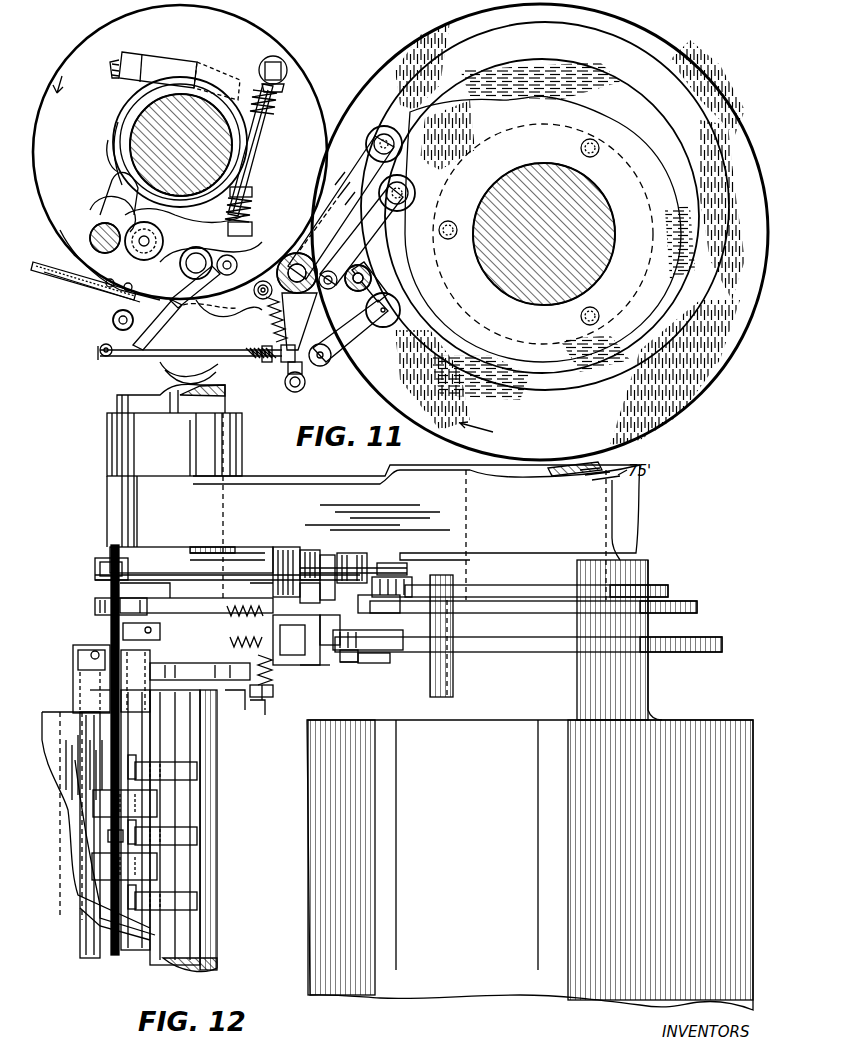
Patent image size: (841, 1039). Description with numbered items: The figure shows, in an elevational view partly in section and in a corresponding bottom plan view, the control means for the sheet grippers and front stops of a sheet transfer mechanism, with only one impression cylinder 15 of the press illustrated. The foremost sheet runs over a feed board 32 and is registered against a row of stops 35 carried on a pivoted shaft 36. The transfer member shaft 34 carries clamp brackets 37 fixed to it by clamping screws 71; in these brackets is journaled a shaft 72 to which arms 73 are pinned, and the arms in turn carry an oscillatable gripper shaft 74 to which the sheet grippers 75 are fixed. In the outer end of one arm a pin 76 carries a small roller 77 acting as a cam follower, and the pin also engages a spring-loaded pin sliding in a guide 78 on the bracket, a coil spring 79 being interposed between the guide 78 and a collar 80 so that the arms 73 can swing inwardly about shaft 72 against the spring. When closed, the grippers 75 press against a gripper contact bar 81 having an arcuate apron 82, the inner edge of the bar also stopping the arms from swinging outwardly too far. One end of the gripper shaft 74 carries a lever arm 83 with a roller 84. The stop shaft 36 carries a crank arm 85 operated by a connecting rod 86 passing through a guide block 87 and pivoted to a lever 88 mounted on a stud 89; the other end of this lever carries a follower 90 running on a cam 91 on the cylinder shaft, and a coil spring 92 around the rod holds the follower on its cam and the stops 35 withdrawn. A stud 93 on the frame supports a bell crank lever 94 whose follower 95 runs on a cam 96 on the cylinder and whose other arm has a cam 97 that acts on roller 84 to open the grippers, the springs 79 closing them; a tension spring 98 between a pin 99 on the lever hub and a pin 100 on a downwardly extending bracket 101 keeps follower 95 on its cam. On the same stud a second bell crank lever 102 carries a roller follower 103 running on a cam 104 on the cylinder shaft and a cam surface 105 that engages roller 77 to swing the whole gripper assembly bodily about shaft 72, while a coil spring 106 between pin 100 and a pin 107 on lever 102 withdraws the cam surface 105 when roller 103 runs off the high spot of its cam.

In FIG. 11, the impression cylinder 15 is at (606, 200).
In FIG. 11, the feed board 32 is at (78, 286).
In FIG. 12, the feed board 32 is at (48, 748).
In FIG. 11, the shaft 34 is at (140, 100).
In FIG. 12, the shaft 34 is at (205, 798).
In FIG. 11, the stops 35 is at (142, 344).
In FIG. 12, the stops 35 is at (94, 798).
In FIG. 11, the shaft 36 is at (113, 323).
In FIG. 12, the shaft 36 is at (112, 400).
In FIG. 11, the clamp brackets 37 is at (118, 124).
In FIG. 12, the clamp brackets 37 is at (90, 690).
In FIG. 11, the clamping screws 71 is at (128, 52).
In FIG. 11, the shaft 72 is at (92, 228).
In FIG. 12, the shaft 72 is at (82, 936).
In FIG. 11, the arms 73 is at (95, 205).
In FIG. 12, the arms 73 is at (74, 660).
In FIG. 11, the gripper shaft 74 is at (184, 300).
In FIG. 12, the gripper shaft 74 is at (205, 866).
In FIG. 11, the sheet grippers 75 is at (200, 310).
In FIG. 12, the sheet grippers 75 is at (198, 770).
In FIG. 11, the pin 76 is at (254, 230).
In FIG. 12, the pin 76 is at (270, 716).
In FIG. 11, the roller 77 is at (270, 128).
In FIG. 12, the roller 77 is at (248, 712).
In FIG. 11, the guide 78 is at (280, 60).
In FIG. 12, the guide 78 is at (278, 616).
In FIG. 11, the coil spring 79 is at (280, 96).
In FIG. 12, the coil spring 79 is at (236, 606).
In FIG. 11, the collar 80 is at (254, 190).
In FIG. 11, the gripper contact bar 81 is at (106, 286).
In FIG. 12, the gripper contact bar 81 is at (150, 725).
In FIG. 11, the arcuate apron 82 is at (80, 268).
In FIG. 12, the arcuate apron 82 is at (62, 816).
In FIG. 11, the lever arm 83 is at (126, 291).
In FIG. 12, the lever arm 83 is at (122, 636).
In FIG. 11, the roller 84 is at (112, 182).
In FIG. 12, the roller 84 is at (168, 590).
In FIG. 11, the crank arm 85 is at (104, 356).
In FIG. 12, the crank arm 85 is at (96, 560).
In FIG. 11, the connecting rod 86 is at (152, 358).
In FIG. 12, the connecting rod 86 is at (160, 556).
In FIG. 11, the guide block 87 is at (287, 364).
In FIG. 12, the guide block 87 is at (298, 556).
In FIG. 11, the lever 88 is at (332, 358).
In FIG. 12, the lever 88 is at (322, 560).
In FIG. 11, the stud 89 is at (358, 266).
In FIG. 12, the stud 89 is at (362, 560).
In FIG. 11, the follower 90 is at (408, 186).
In FIG. 12, the follower 90 is at (406, 566).
In FIG. 11, the cam 91 is at (615, 106).
In FIG. 12, the cam 91 is at (690, 576).
In FIG. 11, the coil spring 92 is at (265, 364).
In FIG. 12, the coil spring 92 is at (258, 562).
In FIG. 11, the stud 93 is at (322, 232).
In FIG. 12, the stud 93 is at (372, 588).
In FIG. 11, the bell crank lever 94 is at (255, 205).
In FIG. 12, the bell crank lever 94 is at (358, 606).
In FIG. 11, the follower 95 is at (384, 127).
In FIG. 12, the follower 95 is at (395, 622).
In FIG. 11, the cam 96 is at (562, 60).
In FIG. 12, the cam 96 is at (724, 596).
In FIG. 11, the cam 97 is at (108, 142).
In FIG. 12, the cam 97 is at (96, 604).
In FIG. 11, the tension spring 98 is at (300, 322).
In FIG. 12, the tension spring 98 is at (275, 668).
In FIG. 11, the pin 99 is at (352, 236).
In FIG. 12, the pin 99 is at (330, 650).
In FIG. 11, the pin 100 is at (306, 383).
In FIG. 12, the pin 100 is at (325, 668).
In FIG. 11, the bracket 101 is at (360, 290).
In FIG. 12, the bracket 101 is at (375, 670).
In FIG. 11, the second bell crank lever 102 is at (270, 320).
In FIG. 12, the second bell crank lever 102 is at (362, 665).
In FIG. 11, the roller follower 103 is at (368, 318).
In FIG. 12, the roller follower 103 is at (390, 653).
In FIG. 11, the cam 104 is at (717, 118).
In FIG. 12, the cam 104 is at (755, 636).
In FIG. 11, the cam surface 105 is at (195, 368).
In FIG. 12, the cam surface 105 is at (162, 682).
In FIG. 11, the coil spring 106 is at (262, 342).
In FIG. 12, the coil spring 106 is at (265, 685).
In FIG. 11, the pin 107 is at (272, 296).
In FIG. 12, the pin 107 is at (275, 698).